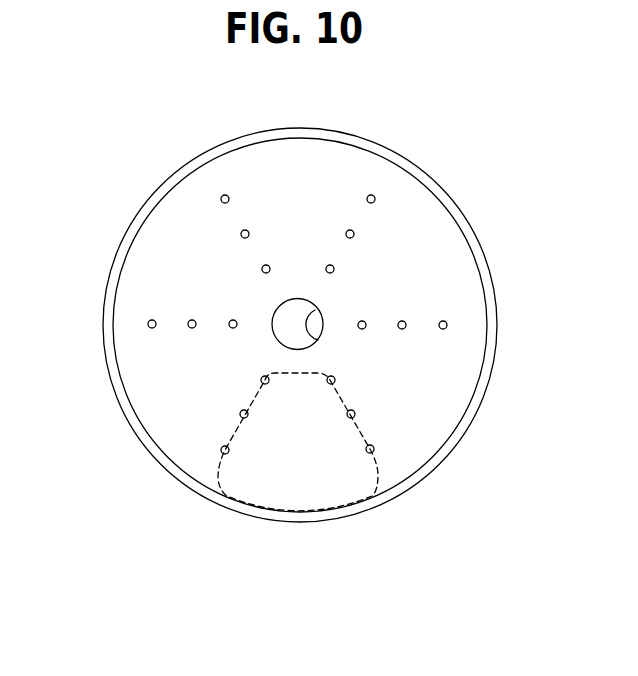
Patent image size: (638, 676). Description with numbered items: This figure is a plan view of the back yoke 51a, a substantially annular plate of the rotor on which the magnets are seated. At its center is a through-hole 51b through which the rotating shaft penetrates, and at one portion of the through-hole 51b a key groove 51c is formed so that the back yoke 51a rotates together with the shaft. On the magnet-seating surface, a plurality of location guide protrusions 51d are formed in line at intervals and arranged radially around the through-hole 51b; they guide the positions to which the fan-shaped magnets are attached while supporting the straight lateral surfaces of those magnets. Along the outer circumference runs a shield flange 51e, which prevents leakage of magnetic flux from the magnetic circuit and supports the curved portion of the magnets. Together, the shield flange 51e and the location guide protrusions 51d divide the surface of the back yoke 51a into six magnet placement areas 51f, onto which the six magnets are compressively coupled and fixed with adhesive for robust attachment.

The back yoke 51a is at (448, 164).
The central through-hole 51b is at (323, 337).
The key groove 51c is at (298, 298).
The location guide protrusions 51d is at (233, 320).
The shield flange 51e is at (122, 420).
The magnet placement areas 51f is at (243, 432).